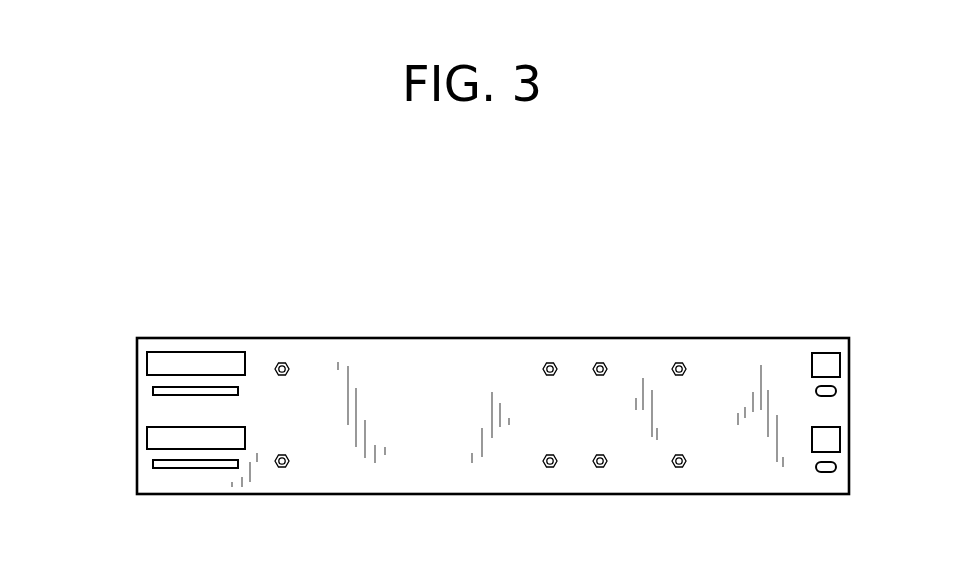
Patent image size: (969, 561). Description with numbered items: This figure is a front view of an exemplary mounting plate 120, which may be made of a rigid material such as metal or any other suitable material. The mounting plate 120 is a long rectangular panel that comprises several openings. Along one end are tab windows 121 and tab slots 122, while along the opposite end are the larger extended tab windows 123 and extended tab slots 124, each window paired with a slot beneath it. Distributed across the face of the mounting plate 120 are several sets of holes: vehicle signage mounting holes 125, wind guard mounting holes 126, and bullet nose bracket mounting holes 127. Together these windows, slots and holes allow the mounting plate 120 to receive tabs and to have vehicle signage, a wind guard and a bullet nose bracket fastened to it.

The mounting plate 120 is at (103, 250).
The tab windows 121 is at (840, 363).
The tab slots 122 is at (836, 391).
The extended tab windows 123 is at (147, 362).
The extended tab slots 124 is at (153, 391).
The vehicle signage mounting holes 125 is at (282, 362).
The wind guard mounting holes 126 is at (600, 362).
The bullet nose bracket mounting holes 127 is at (680, 362).